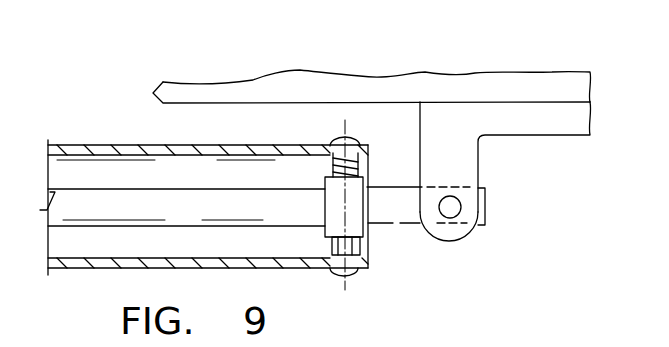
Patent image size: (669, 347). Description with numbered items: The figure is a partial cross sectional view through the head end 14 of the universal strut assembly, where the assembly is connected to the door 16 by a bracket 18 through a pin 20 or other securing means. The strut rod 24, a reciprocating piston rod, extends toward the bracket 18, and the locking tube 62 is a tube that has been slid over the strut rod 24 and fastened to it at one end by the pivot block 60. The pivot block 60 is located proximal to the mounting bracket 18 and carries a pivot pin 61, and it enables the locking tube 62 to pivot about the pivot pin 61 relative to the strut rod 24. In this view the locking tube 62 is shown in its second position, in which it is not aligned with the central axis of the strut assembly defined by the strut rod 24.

The head end 14 is at (502, 185).
The door 16 is at (480, 87).
The bracket 18 is at (568, 125).
The pin 20 is at (450, 210).
The strut rod 24 is at (398, 212).
The pivot block 60 is at (353, 217).
The pivot pin 61 is at (342, 152).
The locking tube 62 is at (67, 150).